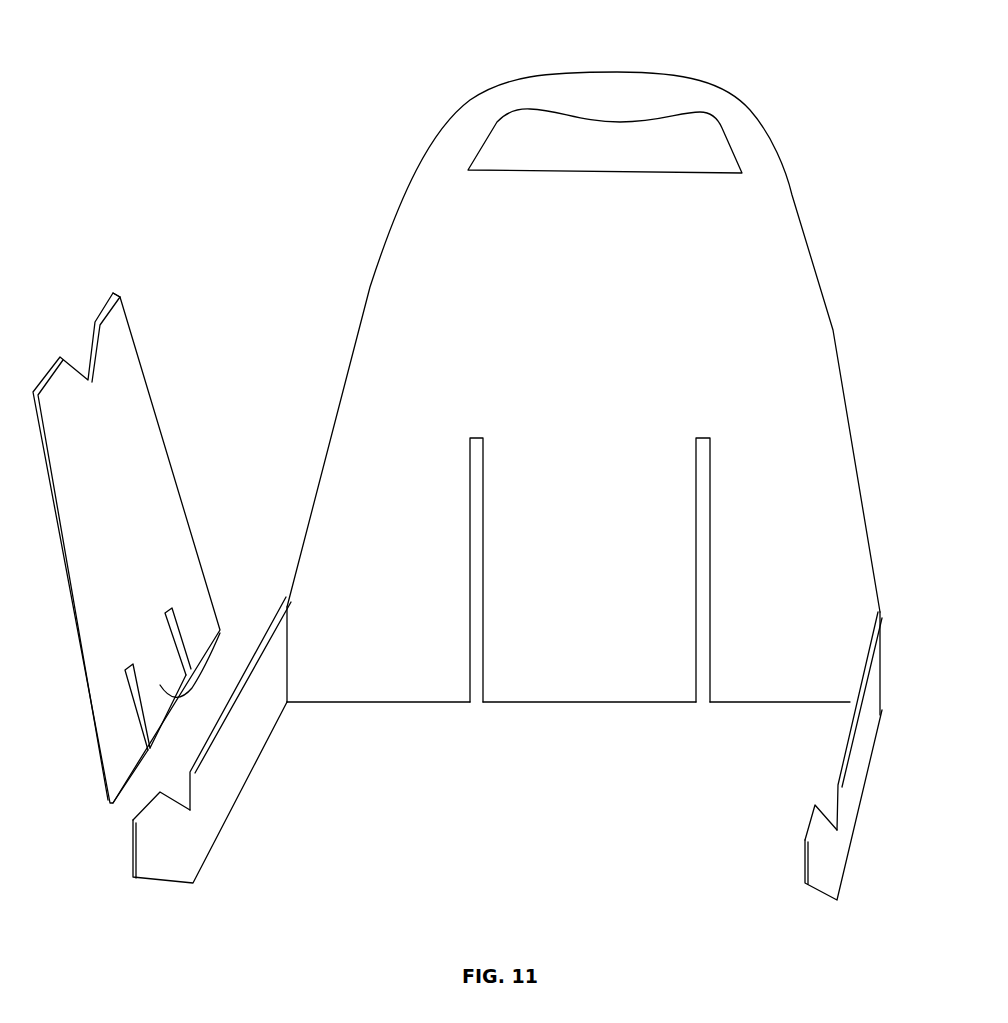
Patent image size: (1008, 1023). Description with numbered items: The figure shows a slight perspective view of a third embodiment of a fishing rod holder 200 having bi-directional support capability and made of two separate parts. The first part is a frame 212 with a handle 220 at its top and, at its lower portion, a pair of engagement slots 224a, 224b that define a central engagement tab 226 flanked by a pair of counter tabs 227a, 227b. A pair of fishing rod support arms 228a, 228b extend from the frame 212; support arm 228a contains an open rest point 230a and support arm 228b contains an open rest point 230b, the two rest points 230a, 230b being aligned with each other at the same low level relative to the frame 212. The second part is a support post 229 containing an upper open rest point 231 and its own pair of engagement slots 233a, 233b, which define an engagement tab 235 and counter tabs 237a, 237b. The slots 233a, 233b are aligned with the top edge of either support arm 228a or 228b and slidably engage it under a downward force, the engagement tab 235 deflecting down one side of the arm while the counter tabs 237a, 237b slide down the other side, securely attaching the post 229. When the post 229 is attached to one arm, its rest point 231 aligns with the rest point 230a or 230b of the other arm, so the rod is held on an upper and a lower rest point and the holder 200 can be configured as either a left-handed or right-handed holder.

The fishing rod holder 200 is at (385, 123).
The frame 212 is at (368, 287).
The handle 220 is at (602, 92).
The engagement slot 224a is at (470, 493).
The engagement slot 224b is at (697, 482).
The engagement tab 226 is at (605, 523).
The counter tab 227a is at (430, 555).
The counter tab 227b is at (801, 553).
The fishing rod support arm 228a is at (238, 768).
The fishing rod support arm 228b is at (840, 760).
The open rest point 230a is at (193, 813).
The open rest point 230b is at (833, 803).
The support post 229 is at (140, 453).
The open rest point 231 is at (92, 350).
The engagement slot 233a is at (137, 663).
The engagement slot 233b is at (177, 604).
The engagement tab 235 is at (195, 620).
The counter tab 237a is at (113, 740).
The counter tab 237b is at (257, 560).